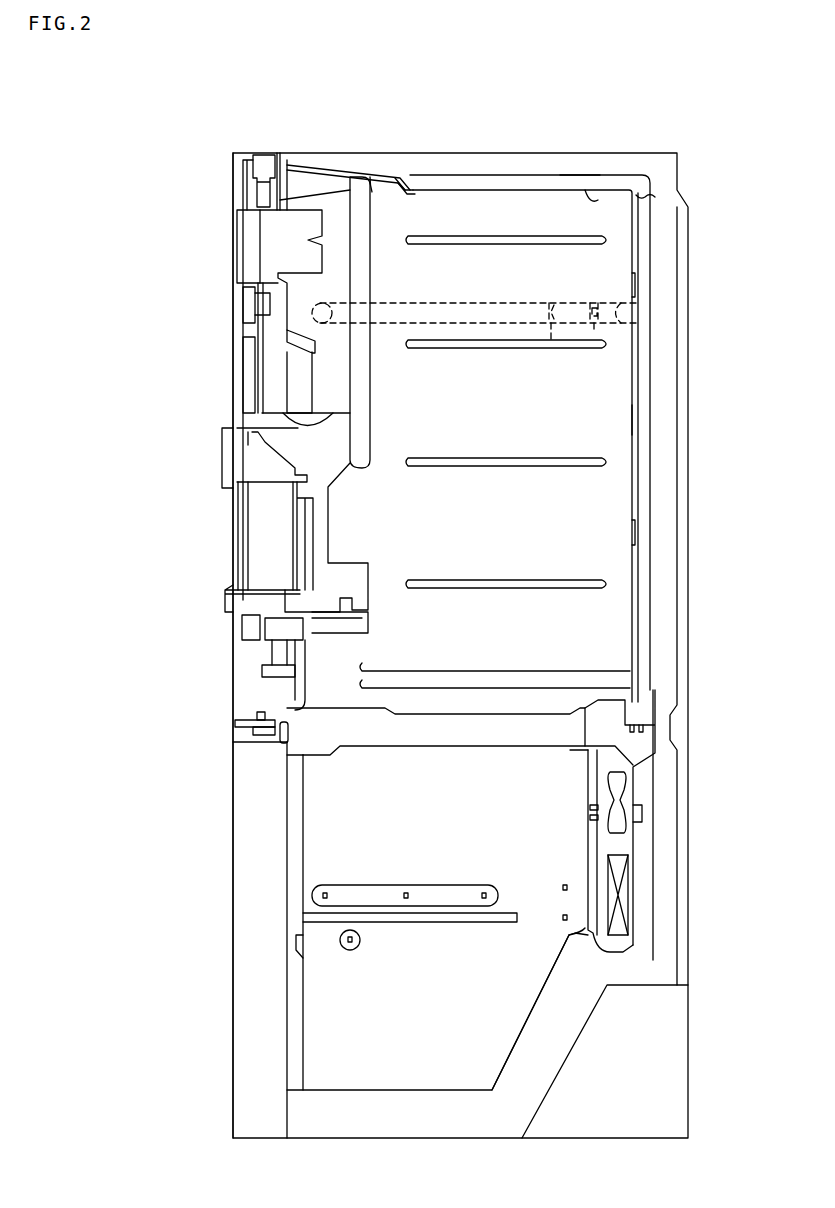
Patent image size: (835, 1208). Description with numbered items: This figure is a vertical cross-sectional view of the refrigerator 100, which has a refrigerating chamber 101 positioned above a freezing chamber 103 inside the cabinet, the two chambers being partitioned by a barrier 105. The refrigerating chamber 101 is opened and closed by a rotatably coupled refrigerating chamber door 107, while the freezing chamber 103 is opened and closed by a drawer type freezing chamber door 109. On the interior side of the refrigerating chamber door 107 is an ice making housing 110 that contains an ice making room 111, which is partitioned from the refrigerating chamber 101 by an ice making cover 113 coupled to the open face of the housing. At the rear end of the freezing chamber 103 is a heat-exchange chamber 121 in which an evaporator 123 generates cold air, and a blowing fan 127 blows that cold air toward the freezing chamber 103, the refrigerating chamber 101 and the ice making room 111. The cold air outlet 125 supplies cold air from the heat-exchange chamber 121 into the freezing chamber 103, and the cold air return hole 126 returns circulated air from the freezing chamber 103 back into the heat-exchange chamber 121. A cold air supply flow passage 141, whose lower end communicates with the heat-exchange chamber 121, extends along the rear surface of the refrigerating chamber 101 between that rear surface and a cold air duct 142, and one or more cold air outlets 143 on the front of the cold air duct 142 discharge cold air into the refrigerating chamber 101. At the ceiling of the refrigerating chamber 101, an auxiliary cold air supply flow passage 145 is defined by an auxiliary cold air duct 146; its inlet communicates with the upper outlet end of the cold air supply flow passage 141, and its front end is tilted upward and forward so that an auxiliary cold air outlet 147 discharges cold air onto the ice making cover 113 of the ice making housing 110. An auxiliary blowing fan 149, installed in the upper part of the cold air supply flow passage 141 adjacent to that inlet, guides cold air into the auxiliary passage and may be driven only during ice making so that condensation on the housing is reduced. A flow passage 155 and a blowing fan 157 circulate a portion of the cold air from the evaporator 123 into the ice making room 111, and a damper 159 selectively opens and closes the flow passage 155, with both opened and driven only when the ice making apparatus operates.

The refrigerator 100 is at (668, 126).
The refrigerating chamber 101 is at (506, 210).
The freezing chamber 103 is at (412, 1058).
The barrier 105 is at (308, 760).
The refrigerating chamber door 107 is at (235, 248).
The freezing chamber door 109 is at (235, 961).
The ice making housing 110 is at (290, 163).
The ice making room 111 is at (334, 368).
The ice making cover 113 is at (378, 198).
The heat-exchange chamber 121 is at (612, 812).
The evaporator 123 is at (617, 900).
The cold air outlet 125 is at (598, 792).
The cold air return hole 126 is at (547, 1000).
The blowing fan 127 is at (625, 828).
The cold air supply flow passage 141 is at (653, 533).
The cold air duct 142 is at (626, 422).
The cold air outlet 143 is at (638, 286).
The auxiliary cold air supply flow passage 145 is at (566, 168).
The auxiliary cold air duct 146 is at (598, 200).
The auxiliary cold air outlet 147 is at (405, 185).
The auxiliary blowing fan 149 is at (650, 190).
The flow passage 155 is at (640, 312).
The blowing fan 157 is at (553, 343).
The damper 159 is at (596, 330).